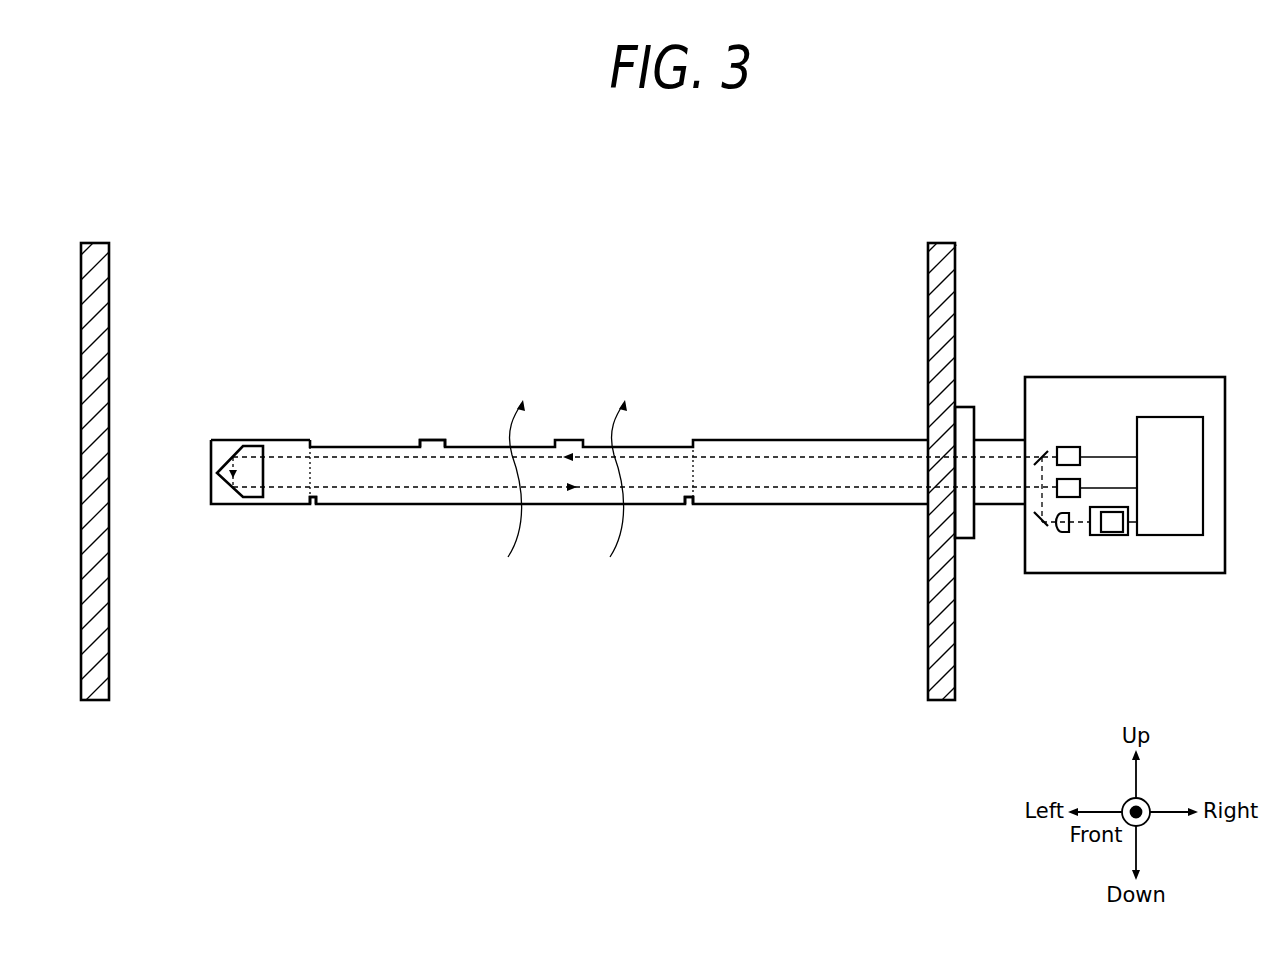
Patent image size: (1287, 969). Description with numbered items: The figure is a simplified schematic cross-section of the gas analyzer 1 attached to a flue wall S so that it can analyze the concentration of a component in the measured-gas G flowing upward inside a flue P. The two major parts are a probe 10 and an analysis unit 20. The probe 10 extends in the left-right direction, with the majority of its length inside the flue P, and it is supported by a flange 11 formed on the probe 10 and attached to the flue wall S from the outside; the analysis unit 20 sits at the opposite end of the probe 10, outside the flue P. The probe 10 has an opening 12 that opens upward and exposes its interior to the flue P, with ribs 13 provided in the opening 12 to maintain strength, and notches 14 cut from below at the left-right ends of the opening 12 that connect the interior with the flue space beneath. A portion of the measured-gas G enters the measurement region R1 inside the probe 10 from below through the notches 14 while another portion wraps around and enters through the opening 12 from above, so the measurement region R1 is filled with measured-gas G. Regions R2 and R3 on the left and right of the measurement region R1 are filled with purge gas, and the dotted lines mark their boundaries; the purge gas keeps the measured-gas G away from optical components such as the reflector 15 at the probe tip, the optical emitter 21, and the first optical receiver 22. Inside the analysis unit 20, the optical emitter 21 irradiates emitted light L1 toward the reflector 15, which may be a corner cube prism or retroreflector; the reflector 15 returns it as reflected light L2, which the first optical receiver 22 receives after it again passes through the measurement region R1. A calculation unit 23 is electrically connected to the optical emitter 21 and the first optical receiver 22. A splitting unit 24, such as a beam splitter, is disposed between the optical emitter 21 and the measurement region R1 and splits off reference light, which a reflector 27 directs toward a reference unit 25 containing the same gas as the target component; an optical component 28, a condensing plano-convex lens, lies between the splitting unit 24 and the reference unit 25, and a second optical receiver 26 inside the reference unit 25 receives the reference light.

The gas analyzer 1 is at (1036, 297).
The probe 10 is at (816, 508).
The flange 11 is at (966, 407).
The opening 12 is at (360, 446).
The ribs 13 is at (434, 440).
The notches 14 is at (310, 508).
The reflector 15 is at (228, 498).
The analysis unit 20 is at (1149, 579).
The optical emitter 21 is at (1068, 447).
The first optical receiver 22 is at (1080, 483).
The calculation unit 23 is at (1153, 418).
The splitting unit 24 is at (1041, 452).
The reference unit 25 is at (1097, 537).
The second optical receiver 26 is at (1118, 534).
The reflector 27 is at (1036, 519).
The optical component 28 is at (1063, 534).
The flue P is at (911, 258).
The flue wall S is at (957, 245).
The measured-gas G is at (562, 491).
The emitted light L1 is at (756, 455).
The reflected light L2 is at (751, 491).
The measurement region R1 is at (449, 480).
The region R2 is at (278, 464).
The region R3 is at (827, 462).